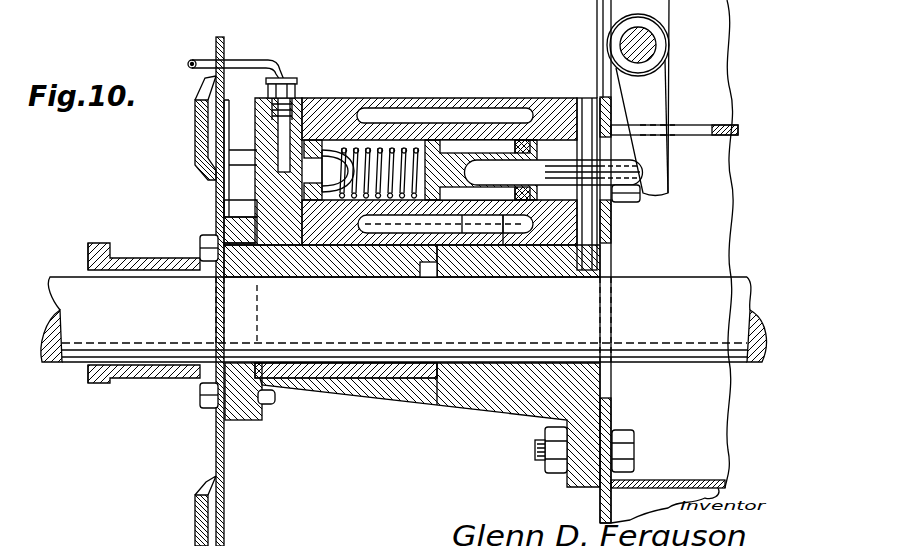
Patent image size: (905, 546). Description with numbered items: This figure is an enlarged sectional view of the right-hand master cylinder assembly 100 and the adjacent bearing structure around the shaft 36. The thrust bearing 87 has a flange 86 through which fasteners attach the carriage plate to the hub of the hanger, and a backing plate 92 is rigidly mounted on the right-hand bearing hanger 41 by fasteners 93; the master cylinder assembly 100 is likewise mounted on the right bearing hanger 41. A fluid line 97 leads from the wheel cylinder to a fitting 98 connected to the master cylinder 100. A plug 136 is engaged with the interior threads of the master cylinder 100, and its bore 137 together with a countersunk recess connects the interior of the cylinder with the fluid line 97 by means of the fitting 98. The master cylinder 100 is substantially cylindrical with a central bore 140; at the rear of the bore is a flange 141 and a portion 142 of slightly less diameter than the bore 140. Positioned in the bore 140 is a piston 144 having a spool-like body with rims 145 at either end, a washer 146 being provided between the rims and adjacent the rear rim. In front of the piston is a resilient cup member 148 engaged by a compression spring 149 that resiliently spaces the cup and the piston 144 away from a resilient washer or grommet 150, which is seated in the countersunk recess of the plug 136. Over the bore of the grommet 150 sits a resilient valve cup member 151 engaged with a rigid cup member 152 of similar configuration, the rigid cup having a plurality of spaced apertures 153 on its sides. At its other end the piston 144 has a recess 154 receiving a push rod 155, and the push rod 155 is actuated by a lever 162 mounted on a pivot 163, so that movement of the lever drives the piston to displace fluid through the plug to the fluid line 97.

The shaft 36 is at (404, 319).
The right-hand bearing hanger 41 is at (400, 413).
The flange 86 is at (88, 388).
The thrust bearing 87 is at (150, 384).
The backing plate 92 is at (214, 432).
The fasteners 93 is at (198, 250).
The fluid line 97 is at (245, 61).
The fitting 98 is at (291, 77).
The master cylinder assembly 100 is at (487, 98).
The plug 136 is at (240, 222).
The bore 137 is at (257, 135).
The central bore 140 is at (428, 142).
The flange 141 is at (586, 112).
The portion 142 is at (612, 222).
The piston 144 is at (452, 250).
The rims 145 is at (450, 140).
The washer 146 is at (505, 248).
The resilient cup member 148 is at (440, 150).
The compression spring 149 is at (383, 146).
The resilient washer or grommet 150 is at (233, 150).
The resilient valve cup member 151 is at (240, 183).
The rigid cup member 152 is at (360, 245).
The spaced apertures 153 is at (340, 158).
The recess 154 is at (554, 172).
The push rod 155 is at (640, 198).
The lever 162 is at (662, 82).
The pivot 163 is at (658, 48).